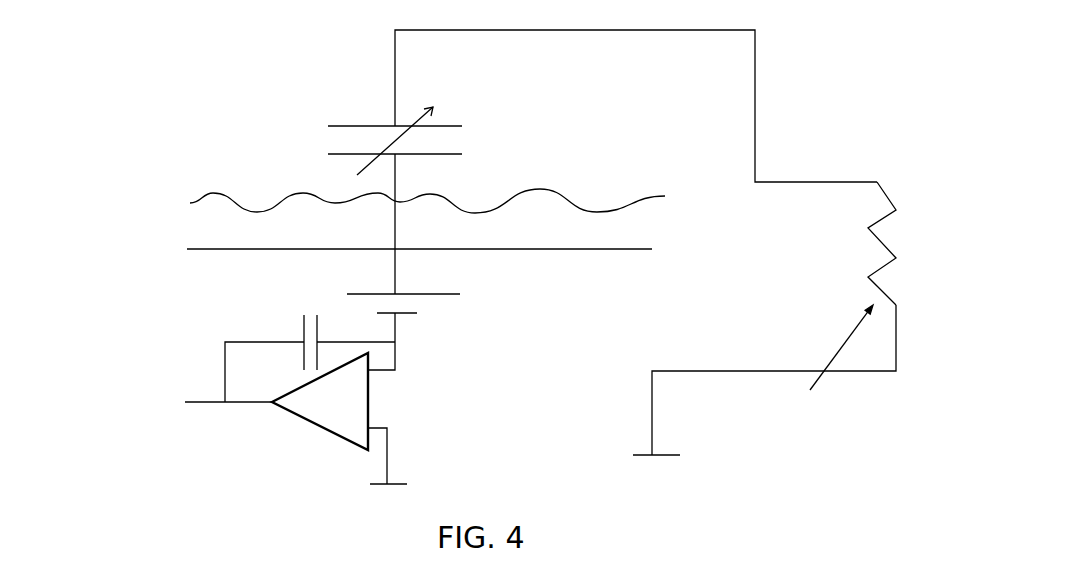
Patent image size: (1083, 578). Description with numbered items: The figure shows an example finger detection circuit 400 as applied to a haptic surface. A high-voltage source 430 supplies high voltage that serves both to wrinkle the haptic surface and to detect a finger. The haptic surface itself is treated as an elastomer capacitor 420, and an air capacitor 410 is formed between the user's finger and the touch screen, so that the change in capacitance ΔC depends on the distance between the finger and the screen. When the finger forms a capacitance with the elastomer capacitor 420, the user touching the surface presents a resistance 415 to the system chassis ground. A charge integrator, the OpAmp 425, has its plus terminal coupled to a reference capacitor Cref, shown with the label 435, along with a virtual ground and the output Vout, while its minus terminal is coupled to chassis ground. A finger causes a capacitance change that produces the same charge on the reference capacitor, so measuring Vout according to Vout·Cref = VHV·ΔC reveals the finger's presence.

The circuit 400 is at (133, 41).
The air capacitor 410 is at (378, 120).
The resistance 415 is at (855, 266).
The elastomer capacitor 420 is at (188, 194).
The OpAmp 425 is at (341, 434).
The high-voltage source 430 is at (430, 321).
The reference capacitor Cref 435 is at (306, 312).